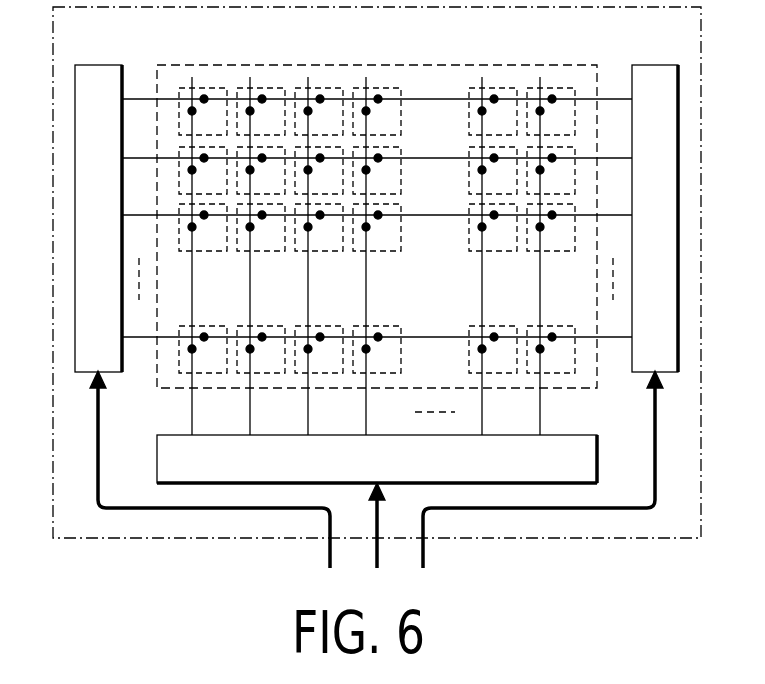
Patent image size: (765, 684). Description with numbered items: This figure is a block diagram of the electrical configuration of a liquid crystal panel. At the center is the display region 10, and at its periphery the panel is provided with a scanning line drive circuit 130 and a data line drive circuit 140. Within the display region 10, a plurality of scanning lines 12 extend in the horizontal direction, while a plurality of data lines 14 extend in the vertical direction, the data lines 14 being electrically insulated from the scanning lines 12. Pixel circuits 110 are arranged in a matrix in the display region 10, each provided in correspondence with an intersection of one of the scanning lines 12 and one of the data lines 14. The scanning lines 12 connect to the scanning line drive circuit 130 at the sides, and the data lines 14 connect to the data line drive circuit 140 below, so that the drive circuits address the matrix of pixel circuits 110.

The display region 10 is at (290, 63).
The scanning lines 12 is at (406, 100).
The data lines 14 is at (193, 258).
The pixel circuits 110 is at (469, 252).
The scanning line drive circuit 130 is at (100, 64).
The data line drive circuit 140 is at (158, 458).